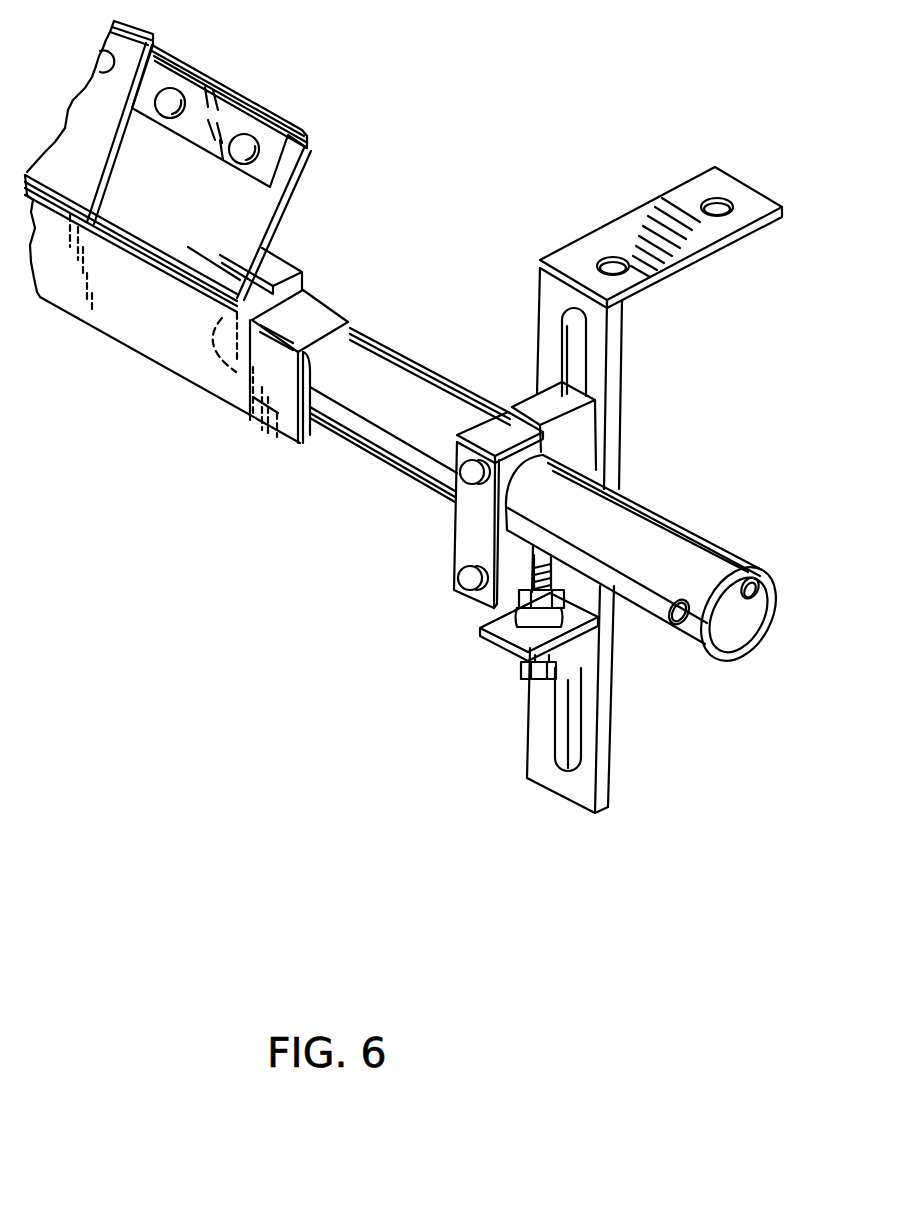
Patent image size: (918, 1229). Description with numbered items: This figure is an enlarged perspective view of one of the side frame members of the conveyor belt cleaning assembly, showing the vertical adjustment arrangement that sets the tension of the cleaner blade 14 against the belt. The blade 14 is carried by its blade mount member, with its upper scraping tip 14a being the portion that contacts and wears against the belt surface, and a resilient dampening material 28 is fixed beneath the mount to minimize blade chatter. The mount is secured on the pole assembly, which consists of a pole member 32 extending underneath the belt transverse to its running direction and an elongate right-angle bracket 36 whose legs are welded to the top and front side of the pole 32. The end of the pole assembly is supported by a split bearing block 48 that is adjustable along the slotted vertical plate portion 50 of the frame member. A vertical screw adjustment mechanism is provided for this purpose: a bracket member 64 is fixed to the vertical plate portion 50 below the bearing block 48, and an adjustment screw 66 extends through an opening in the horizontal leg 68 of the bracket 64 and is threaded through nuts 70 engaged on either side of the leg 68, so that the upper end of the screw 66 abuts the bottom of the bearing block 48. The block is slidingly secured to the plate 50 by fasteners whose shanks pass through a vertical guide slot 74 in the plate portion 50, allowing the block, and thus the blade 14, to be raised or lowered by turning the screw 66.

The cleaner blade 14 is at (263, 172).
The upper scraping tip 14a is at (262, 108).
The resilient dampening material 28 is at (307, 292).
The pole member 32 is at (385, 372).
The elongate right-angle bracket 36 is at (214, 430).
The split bearing block 48 is at (437, 553).
The slotted vertical plate portion 50 is at (654, 502).
The bracket member 64 is at (590, 668).
The adjustment screw 66 is at (515, 650).
The horizontal leg 68 is at (515, 658).
The nuts 70 is at (565, 625).
The vertical guide slot 74 is at (580, 345).